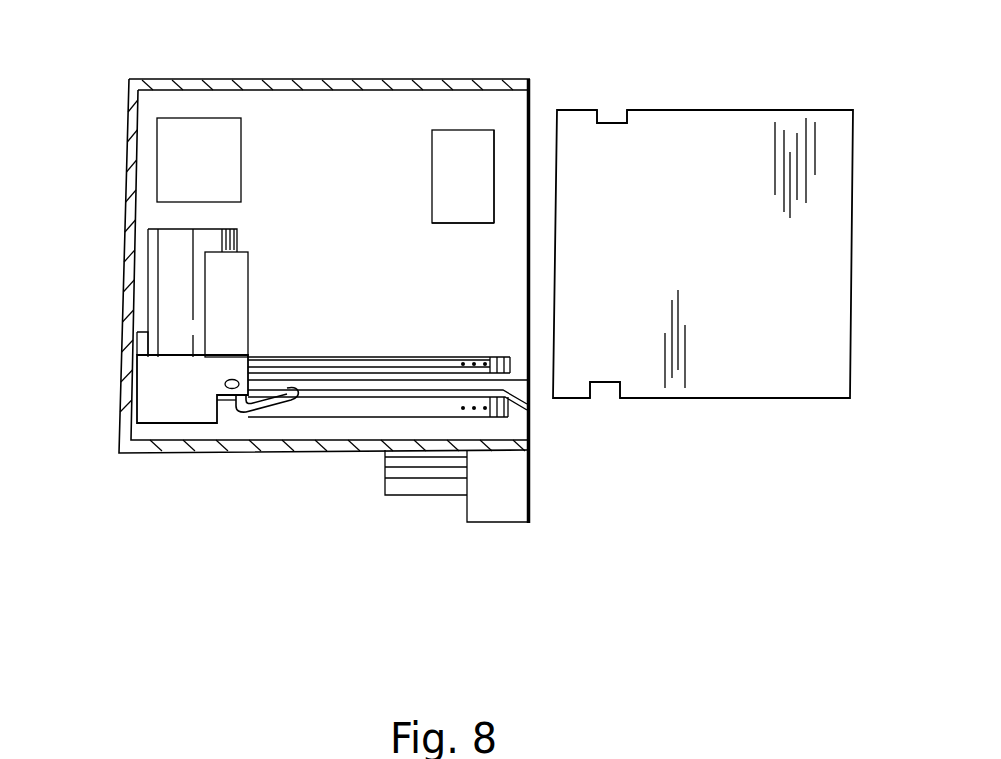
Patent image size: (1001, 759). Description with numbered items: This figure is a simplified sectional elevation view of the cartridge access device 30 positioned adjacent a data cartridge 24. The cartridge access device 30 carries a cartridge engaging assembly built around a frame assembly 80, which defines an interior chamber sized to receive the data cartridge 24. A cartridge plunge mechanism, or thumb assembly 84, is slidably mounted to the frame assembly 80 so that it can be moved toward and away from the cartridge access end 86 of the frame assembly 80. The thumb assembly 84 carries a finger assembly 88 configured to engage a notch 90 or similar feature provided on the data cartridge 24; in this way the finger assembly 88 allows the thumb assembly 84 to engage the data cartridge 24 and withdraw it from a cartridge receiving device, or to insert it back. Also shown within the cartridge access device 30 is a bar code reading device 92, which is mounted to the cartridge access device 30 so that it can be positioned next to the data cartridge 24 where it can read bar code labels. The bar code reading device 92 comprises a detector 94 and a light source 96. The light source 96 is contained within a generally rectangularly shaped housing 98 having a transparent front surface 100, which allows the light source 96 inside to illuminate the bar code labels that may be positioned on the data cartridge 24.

The data cartridge 24 is at (855, 128).
The cartridge access device 30 is at (127, 77).
The frame assembly 80 is at (131, 125).
The thumb assembly 84 is at (146, 289).
The cartridge access end 86 is at (532, 93).
The finger assembly 88 is at (251, 415).
The notch 90 is at (611, 120).
The bar code reading device 92 is at (367, 150).
The detector 94 is at (212, 118).
The light source 96 is at (432, 130).
The housing 98 is at (448, 224).
The transparent front surface 100 is at (505, 105).